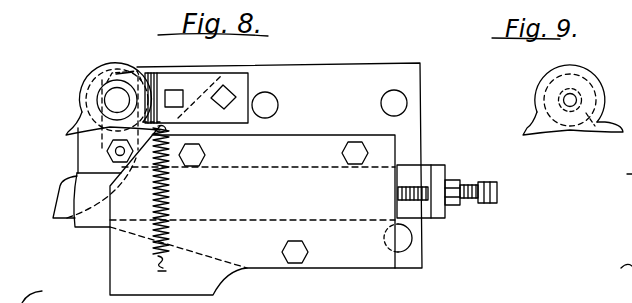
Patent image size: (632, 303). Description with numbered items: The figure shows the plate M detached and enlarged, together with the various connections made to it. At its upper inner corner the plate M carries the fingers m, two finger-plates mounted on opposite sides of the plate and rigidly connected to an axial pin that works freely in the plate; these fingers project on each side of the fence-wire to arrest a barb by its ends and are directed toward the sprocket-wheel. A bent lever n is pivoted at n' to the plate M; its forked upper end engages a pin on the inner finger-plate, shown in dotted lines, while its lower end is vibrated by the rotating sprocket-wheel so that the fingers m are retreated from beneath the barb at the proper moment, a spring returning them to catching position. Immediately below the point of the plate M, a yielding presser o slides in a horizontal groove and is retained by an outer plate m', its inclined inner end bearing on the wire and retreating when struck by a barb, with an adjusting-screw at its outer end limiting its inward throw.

In FIG. 8, the plate M is at (244, 179).
In FIG. 8, the fingers m is at (98, 99).
In FIG. 9, the fingers m is at (563, 100).
In FIG. 8, the outer plate m' is at (196, 98).
In FIG. 8, the bent lever n is at (71, 200).
In FIG. 8, the pivot n' is at (93, 151).
In FIG. 8, the presser o is at (470, 179).